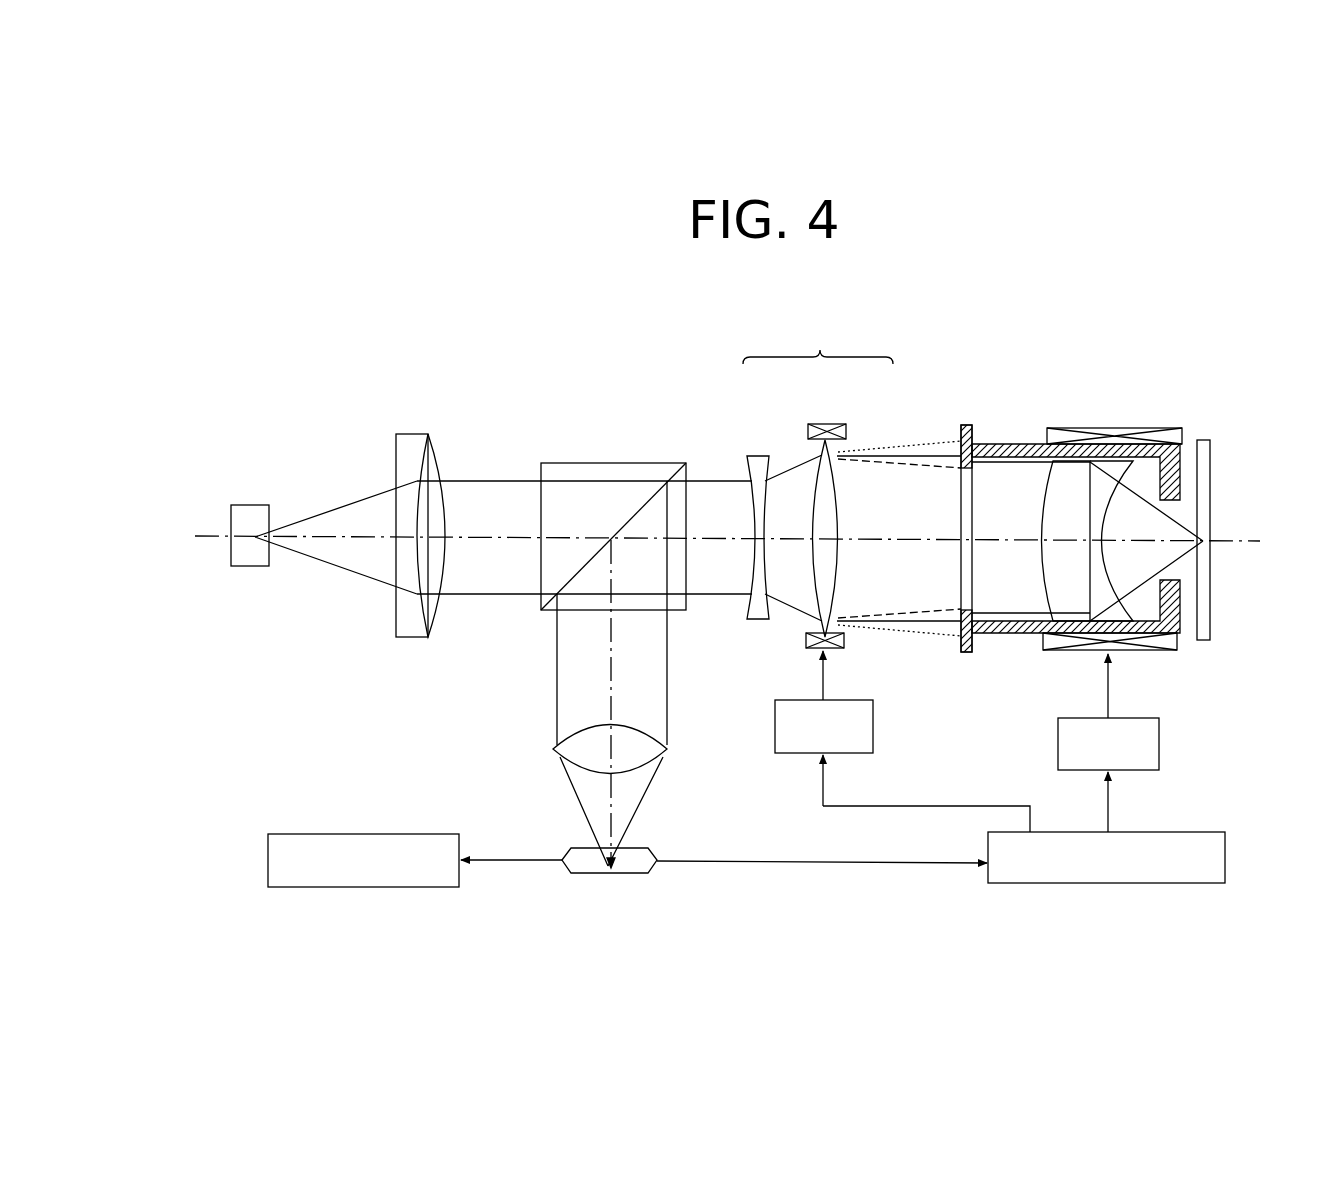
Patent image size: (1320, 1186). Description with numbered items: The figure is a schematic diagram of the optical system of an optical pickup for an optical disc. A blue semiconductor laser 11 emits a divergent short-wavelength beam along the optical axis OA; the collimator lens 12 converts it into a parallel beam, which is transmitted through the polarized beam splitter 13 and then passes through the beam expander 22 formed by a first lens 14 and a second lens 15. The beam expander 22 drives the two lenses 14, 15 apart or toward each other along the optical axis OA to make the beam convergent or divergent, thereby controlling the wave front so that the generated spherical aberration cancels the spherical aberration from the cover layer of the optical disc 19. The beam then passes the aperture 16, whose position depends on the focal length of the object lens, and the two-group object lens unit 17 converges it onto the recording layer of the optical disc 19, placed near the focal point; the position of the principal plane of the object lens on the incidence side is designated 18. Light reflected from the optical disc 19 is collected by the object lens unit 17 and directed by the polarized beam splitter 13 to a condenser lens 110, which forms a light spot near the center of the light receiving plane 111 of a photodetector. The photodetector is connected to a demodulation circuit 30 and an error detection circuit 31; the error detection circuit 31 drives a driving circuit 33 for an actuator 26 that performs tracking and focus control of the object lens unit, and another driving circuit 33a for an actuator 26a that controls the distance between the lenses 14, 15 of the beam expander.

The optical axis OA is at (205, 535).
The blue semiconductor laser 11 is at (254, 503).
The collimator lens 12 is at (418, 434).
The polarized beam splitter 13 is at (620, 463).
The first lens 14 is at (761, 452).
The second lens 15 is at (836, 452).
The aperture 16 is at (966, 425).
The two-group object lens unit 17 is at (1016, 444).
The position of the principal plane of the object lens on the incidence side 18 is at (1091, 427).
The optical disc 19 is at (1205, 440).
The beam expander 22 is at (818, 339).
The actuator 26 is at (1158, 652).
The actuator 26a is at (845, 650).
The demodulation circuit 30 is at (433, 834).
The error detection circuit 31 is at (1225, 845).
The driving circuit 33 is at (1159, 730).
The driving circuit 33a is at (873, 714).
The condenser lens 110 is at (667, 749).
The light receiving plane 111 is at (610, 874).